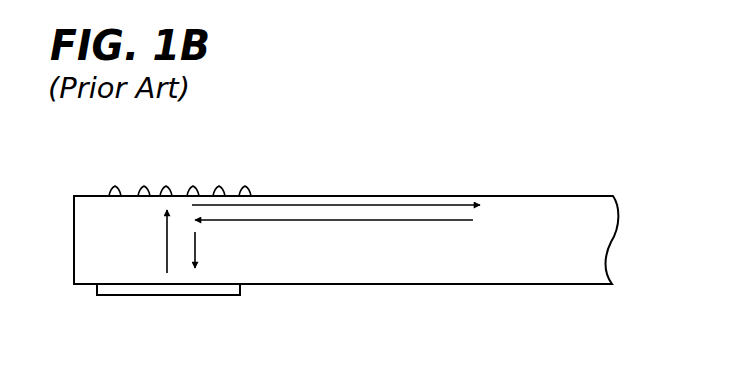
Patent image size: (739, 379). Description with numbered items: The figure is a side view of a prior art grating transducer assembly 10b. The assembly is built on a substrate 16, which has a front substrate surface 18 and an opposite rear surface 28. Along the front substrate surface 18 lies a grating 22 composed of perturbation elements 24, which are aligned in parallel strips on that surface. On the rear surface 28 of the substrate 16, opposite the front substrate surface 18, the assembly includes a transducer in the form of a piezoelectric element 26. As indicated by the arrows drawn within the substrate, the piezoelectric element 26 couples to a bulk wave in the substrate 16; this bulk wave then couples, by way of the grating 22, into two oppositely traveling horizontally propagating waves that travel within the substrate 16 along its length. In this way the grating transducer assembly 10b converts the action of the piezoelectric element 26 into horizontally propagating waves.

The grating transducer assembly 10b is at (253, 192).
The substrate 16 is at (470, 272).
The front substrate surface 18 is at (481, 195).
The grating 22 is at (190, 184).
The perturbation elements 24 is at (166, 187).
The piezoelectric element 26 is at (120, 295).
The rear surface 28 is at (300, 284).